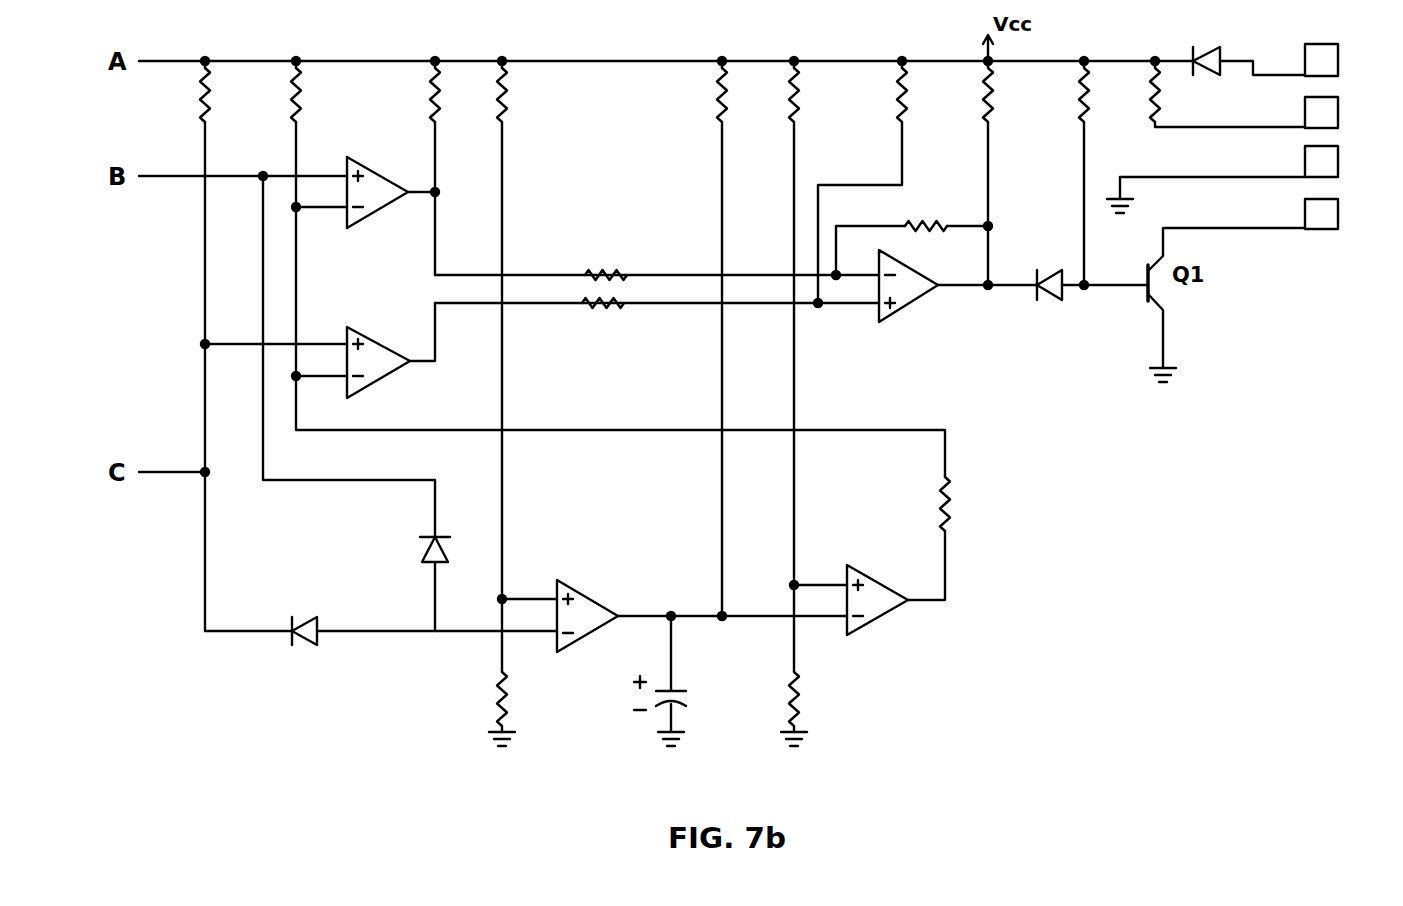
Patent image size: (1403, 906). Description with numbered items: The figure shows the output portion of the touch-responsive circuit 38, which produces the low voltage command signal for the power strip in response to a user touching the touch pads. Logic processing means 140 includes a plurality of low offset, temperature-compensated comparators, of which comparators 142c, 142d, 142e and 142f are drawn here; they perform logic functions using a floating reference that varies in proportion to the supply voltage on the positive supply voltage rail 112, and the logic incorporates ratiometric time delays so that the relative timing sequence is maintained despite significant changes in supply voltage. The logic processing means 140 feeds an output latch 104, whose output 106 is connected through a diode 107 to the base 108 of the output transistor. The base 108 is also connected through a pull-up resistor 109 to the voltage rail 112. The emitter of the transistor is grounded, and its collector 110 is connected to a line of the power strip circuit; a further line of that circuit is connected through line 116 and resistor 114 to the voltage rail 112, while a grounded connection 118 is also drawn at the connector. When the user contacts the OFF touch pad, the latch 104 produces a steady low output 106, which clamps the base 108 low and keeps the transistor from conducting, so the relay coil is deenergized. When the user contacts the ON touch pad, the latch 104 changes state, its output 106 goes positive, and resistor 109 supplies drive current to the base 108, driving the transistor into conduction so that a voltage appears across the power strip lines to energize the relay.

The touch-responsive circuit 38 is at (618, 23).
The positive supply voltage rail 112 is at (858, 60).
The resistor 114 is at (1152, 82).
The line 116 is at (1190, 128).
The ground connector line 118 is at (1178, 177).
The collector 110 is at (1235, 228).
The pull-up resistor 109 is at (1080, 92).
The diode 107 is at (1049, 269).
The base 108 is at (1116, 282).
The output 106 is at (975, 287).
The output latch 104 is at (898, 312).
The logic processing means 140 is at (618, 391).
The comparator 142c is at (377, 171).
The comparator 142d is at (380, 341).
The comparator 142e is at (598, 601).
The comparator 142f is at (881, 585).